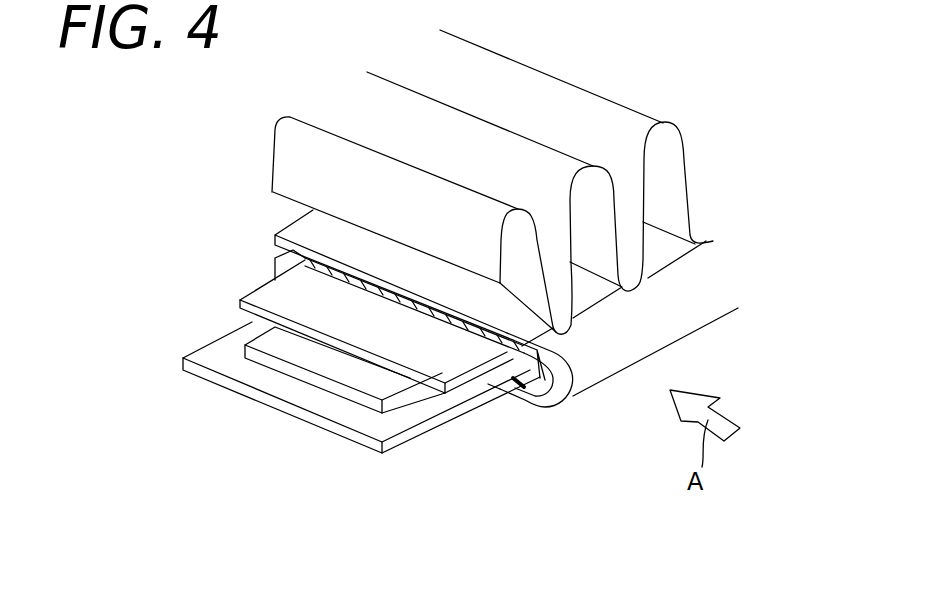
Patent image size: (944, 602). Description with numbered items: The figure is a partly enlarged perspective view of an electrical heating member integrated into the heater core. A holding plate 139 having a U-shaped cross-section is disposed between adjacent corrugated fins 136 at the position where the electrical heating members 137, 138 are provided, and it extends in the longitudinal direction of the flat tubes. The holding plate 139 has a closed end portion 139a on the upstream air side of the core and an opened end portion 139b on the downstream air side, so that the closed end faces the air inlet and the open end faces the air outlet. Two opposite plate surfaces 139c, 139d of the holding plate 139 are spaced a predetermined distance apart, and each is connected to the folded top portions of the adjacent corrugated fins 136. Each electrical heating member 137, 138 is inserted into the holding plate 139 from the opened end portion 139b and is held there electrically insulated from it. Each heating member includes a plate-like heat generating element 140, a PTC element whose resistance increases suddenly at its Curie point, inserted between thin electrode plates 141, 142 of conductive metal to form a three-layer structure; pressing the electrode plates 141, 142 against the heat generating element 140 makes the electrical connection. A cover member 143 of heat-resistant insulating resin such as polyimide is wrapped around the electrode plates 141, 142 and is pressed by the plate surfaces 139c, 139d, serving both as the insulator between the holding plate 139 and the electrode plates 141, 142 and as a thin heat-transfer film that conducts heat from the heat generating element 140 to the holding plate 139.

The corrugated fin 136 is at (682, 173).
The electrical heating member 137 is at (340, 375).
The electrical heating member 138 is at (340, 375).
The holding plate 139 is at (702, 343).
The closed end portion 139a is at (570, 388).
The opened end portion 139b is at (277, 233).
The plate surface 139c is at (360, 272).
The plate surface 139d is at (503, 392).
The heat generating element 140 is at (277, 340).
The electrode plate 141 is at (283, 298).
The electrode plate 142 is at (246, 377).
The cover member 143 is at (530, 378).